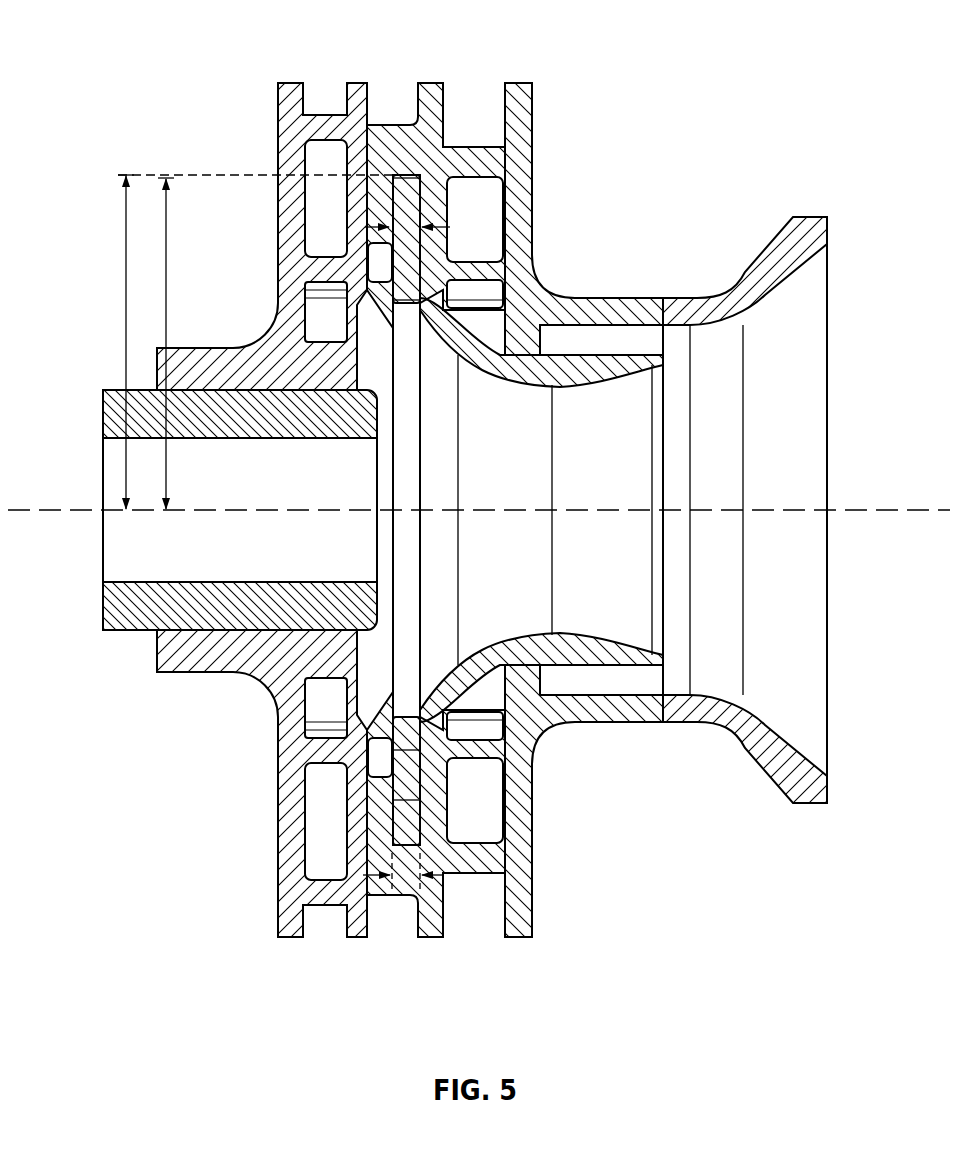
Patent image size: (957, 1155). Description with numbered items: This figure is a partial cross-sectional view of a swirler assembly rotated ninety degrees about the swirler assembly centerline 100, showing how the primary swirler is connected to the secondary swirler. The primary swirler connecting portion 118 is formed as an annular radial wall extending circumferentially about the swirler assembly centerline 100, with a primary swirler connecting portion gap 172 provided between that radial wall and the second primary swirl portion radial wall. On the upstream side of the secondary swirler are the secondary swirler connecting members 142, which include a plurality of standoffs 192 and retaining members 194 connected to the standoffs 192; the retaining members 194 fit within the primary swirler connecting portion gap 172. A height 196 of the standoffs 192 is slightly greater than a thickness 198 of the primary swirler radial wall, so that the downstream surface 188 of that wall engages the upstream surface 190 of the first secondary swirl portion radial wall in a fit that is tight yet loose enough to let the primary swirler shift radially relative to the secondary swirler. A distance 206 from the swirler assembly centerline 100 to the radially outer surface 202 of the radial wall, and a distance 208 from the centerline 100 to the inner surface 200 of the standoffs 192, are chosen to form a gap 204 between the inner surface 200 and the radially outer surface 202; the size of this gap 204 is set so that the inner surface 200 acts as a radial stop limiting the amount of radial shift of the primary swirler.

The swirler assembly centerline 100 is at (78, 508).
The primary swirler connecting portion 118 is at (406, 239).
The secondary swirler connecting members 142 is at (515, 219).
The primary swirler connecting portion gap 172 is at (380, 262).
The downstream surface 188 is at (429, 750).
The upstream surface 190 is at (416, 818).
The standoffs 192 is at (407, 875).
The retaining members 194 is at (381, 806).
The height 196 is at (429, 875).
The thickness 198 is at (416, 167).
The inner surface 200 is at (415, 167).
The radially outer surface 202 is at (406, 184).
The gap 204 is at (425, 175).
The distance 206 is at (167, 277).
The distance 208 is at (127, 295).